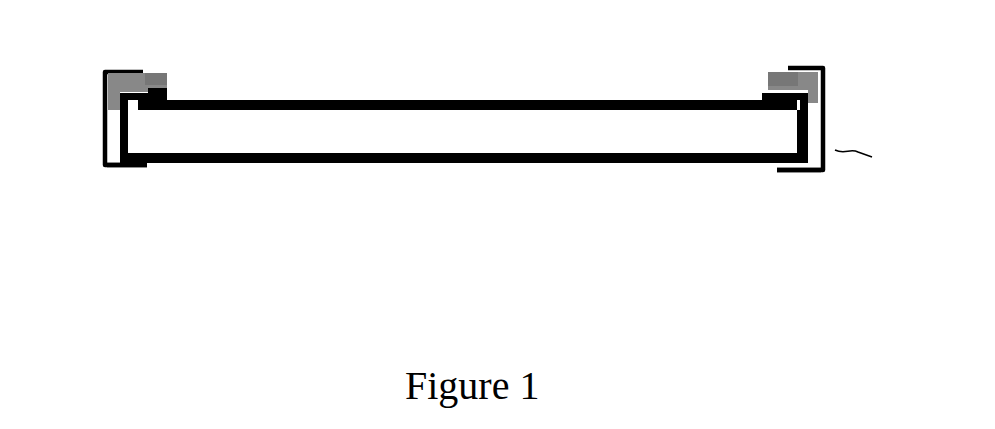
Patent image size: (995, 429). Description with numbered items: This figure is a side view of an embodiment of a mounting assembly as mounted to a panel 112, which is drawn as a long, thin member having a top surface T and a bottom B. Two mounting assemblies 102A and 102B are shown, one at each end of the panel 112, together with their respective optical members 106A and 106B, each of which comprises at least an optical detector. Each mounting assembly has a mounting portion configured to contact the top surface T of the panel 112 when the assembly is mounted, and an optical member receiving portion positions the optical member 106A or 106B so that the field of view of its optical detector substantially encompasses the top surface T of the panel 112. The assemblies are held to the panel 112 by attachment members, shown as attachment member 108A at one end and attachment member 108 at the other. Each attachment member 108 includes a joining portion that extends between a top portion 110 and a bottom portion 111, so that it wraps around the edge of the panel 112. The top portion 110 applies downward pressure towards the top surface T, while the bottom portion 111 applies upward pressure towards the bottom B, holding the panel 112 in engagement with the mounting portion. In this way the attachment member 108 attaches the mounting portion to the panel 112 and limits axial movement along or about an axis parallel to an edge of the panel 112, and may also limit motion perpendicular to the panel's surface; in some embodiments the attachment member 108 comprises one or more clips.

The mounting assembly 102A is at (153, 90).
The mounting assembly 102B is at (798, 130).
The optical member 106A is at (155, 77).
The optical member 106B is at (770, 80).
The attachment member 108 is at (823, 113).
The attachment member 108A is at (105, 107).
The top portion 110 is at (110, 66).
The bottom portion 111 is at (120, 168).
The panel 112 is at (233, 143).
The top surface T is at (385, 100).
The bottom surface B is at (398, 163).